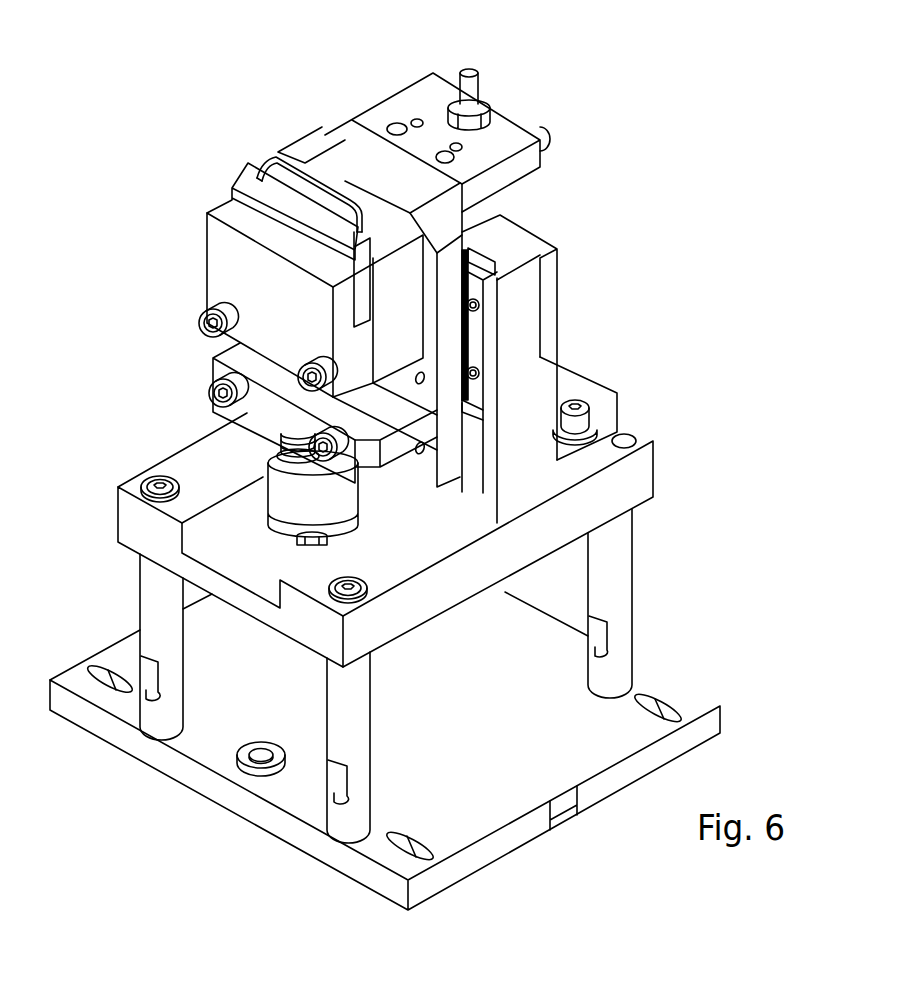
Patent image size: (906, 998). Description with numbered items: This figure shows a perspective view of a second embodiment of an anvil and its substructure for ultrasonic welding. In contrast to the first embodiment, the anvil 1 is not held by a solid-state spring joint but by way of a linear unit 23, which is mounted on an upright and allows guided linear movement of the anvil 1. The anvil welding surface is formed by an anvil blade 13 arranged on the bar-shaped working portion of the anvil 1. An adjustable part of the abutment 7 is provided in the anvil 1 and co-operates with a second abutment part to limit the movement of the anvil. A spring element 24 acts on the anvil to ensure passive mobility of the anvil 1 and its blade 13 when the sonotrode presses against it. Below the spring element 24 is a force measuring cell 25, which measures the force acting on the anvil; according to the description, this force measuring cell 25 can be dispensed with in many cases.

The anvil 1 is at (382, 118).
The adjustable part of the abutment 7 is at (472, 93).
The anvil blade 13 is at (282, 157).
The linear unit 23 is at (473, 287).
The spring element 24 is at (290, 438).
The force measuring cell 25 is at (275, 497).